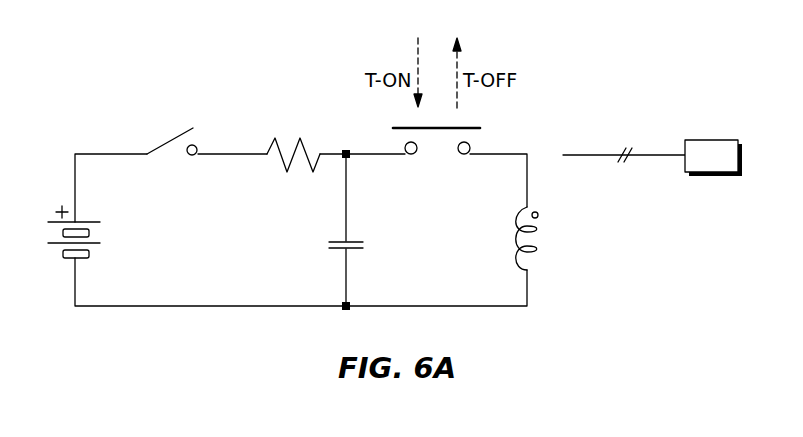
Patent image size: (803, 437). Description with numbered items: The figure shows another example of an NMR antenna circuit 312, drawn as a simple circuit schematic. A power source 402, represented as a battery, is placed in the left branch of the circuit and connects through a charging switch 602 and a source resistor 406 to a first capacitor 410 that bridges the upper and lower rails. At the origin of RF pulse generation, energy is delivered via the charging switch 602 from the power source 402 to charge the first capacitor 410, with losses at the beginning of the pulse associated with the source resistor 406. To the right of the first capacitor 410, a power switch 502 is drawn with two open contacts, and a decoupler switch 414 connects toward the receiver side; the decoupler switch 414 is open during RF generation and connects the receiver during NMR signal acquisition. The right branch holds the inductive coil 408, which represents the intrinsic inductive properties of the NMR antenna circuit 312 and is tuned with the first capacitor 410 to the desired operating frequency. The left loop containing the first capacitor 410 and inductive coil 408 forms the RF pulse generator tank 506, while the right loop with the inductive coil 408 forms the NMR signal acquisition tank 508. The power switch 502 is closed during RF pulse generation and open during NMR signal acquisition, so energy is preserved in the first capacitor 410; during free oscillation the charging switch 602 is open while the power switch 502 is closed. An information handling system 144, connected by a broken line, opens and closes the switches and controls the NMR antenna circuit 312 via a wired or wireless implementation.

The NMR antenna circuit 312 is at (677, 53).
The charging switch 602 is at (167, 142).
The power source 402 is at (70, 259).
The source resistor 406 is at (310, 148).
The first capacitor 410 is at (340, 252).
The power switch 502 is at (475, 137).
The decoupler switch 414 is at (435, 156).
The inductive coil 408 is at (522, 268).
The information handling system 144 is at (731, 167).
The RF pulse generator tank 506 is at (240, 345).
The NMR signal acquisition tank 508 is at (572, 342).